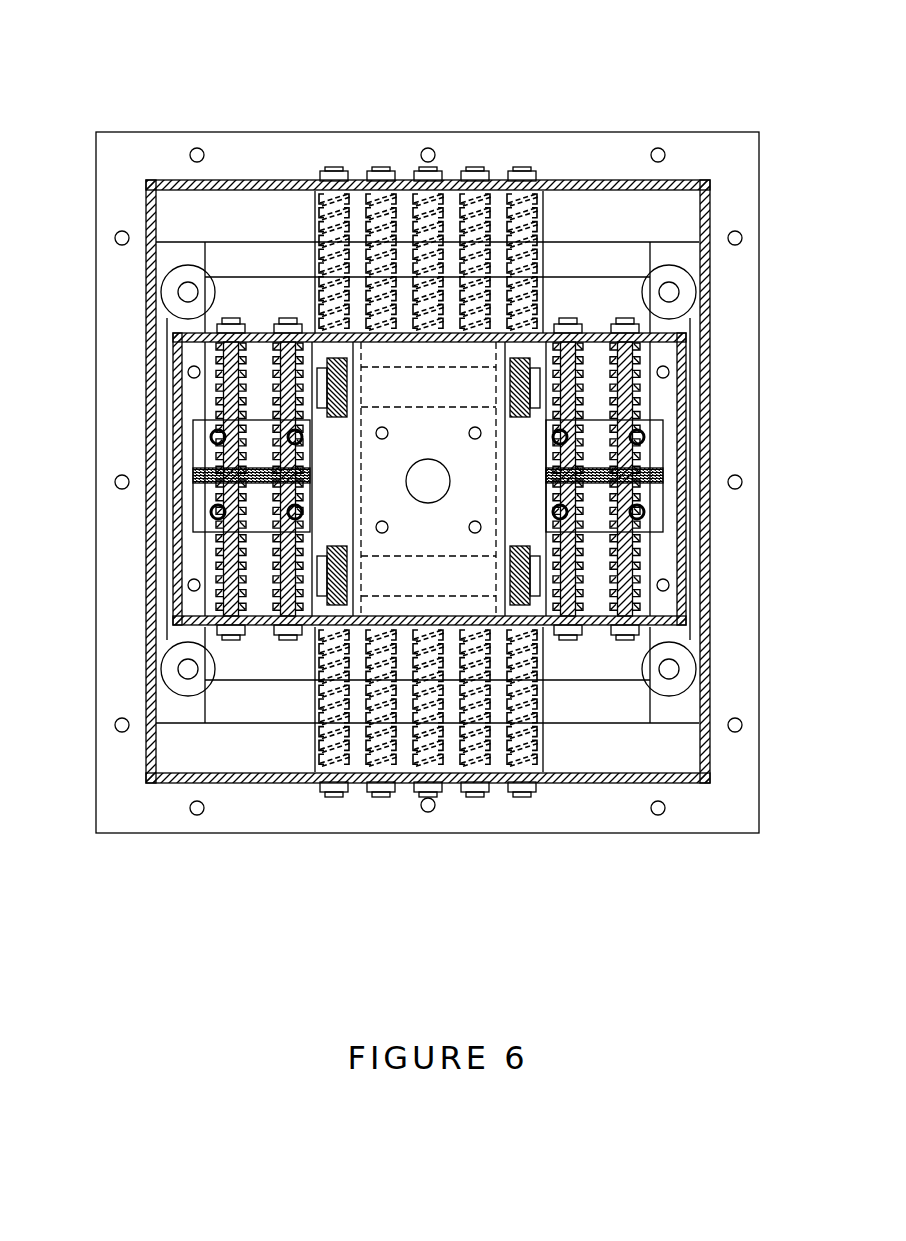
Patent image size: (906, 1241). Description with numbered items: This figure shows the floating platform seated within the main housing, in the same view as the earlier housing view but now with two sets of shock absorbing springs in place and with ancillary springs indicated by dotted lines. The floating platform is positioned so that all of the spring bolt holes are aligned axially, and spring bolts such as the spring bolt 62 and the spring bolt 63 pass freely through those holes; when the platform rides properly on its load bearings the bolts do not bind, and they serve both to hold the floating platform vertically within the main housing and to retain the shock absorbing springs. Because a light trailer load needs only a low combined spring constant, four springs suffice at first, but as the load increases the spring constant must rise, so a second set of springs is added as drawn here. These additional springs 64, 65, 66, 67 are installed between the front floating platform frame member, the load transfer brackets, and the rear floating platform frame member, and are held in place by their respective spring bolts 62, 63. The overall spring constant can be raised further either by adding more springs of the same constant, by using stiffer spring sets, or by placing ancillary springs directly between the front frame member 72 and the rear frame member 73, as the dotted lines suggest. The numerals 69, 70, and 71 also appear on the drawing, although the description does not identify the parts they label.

The spring bolt 62 is at (625, 318).
The spring bolt 63 is at (231, 318).
The additional spring 64 is at (582, 390).
The additional spring 65 is at (270, 421).
The additional spring 66 is at (630, 417).
The additional spring 67 is at (270, 550).
The spring 69 is at (215, 393).
The mounting block 70 is at (643, 572).
The mounting block 71 is at (225, 556).
The front frame member 72 is at (522, 167).
The rear frame member 73 is at (522, 797).